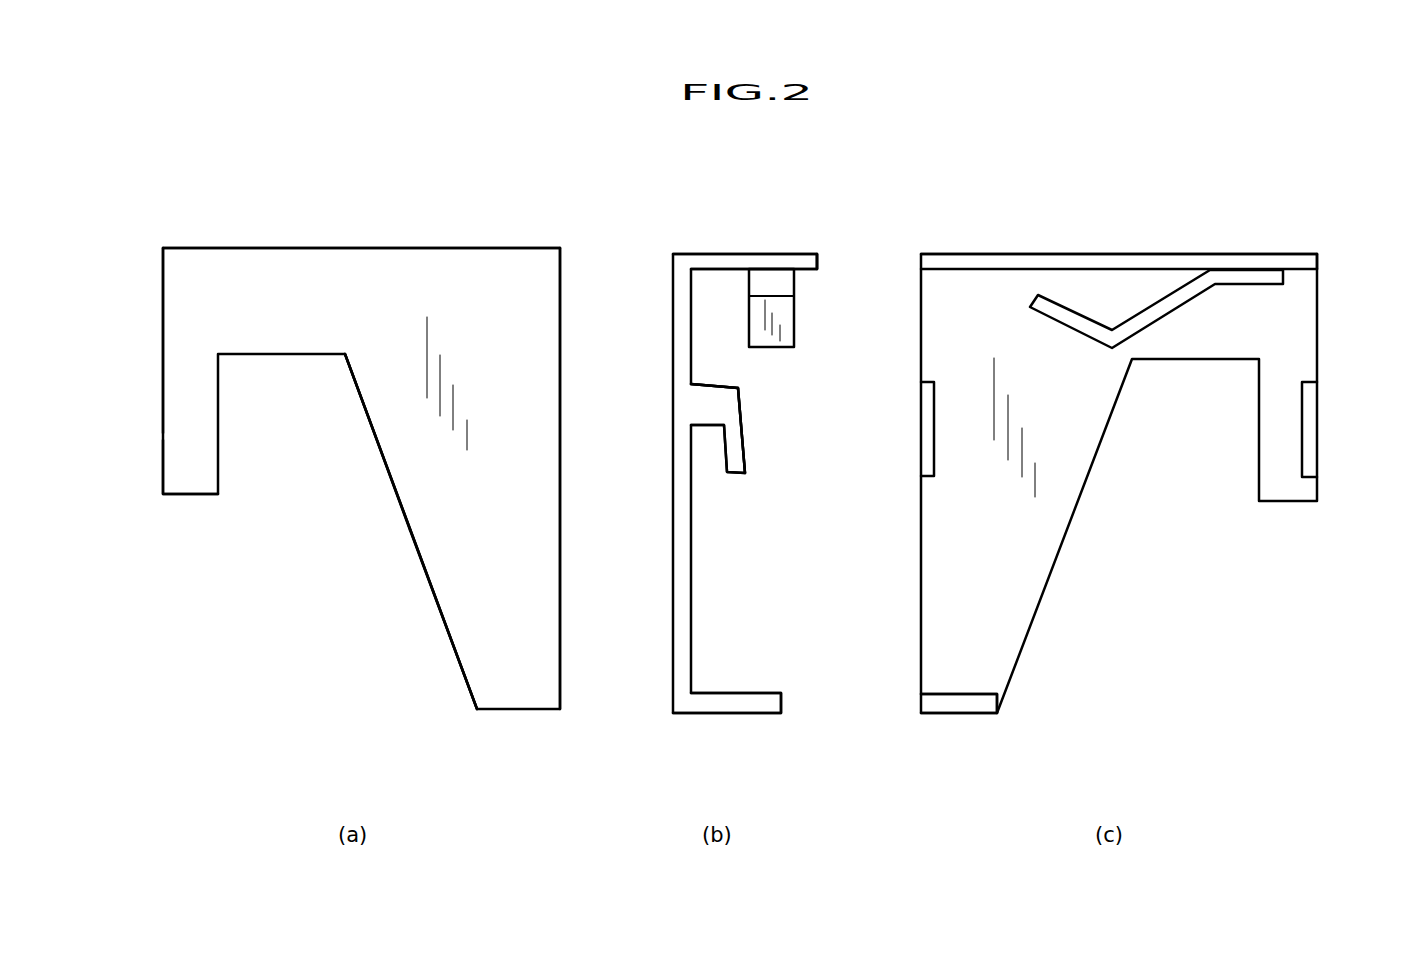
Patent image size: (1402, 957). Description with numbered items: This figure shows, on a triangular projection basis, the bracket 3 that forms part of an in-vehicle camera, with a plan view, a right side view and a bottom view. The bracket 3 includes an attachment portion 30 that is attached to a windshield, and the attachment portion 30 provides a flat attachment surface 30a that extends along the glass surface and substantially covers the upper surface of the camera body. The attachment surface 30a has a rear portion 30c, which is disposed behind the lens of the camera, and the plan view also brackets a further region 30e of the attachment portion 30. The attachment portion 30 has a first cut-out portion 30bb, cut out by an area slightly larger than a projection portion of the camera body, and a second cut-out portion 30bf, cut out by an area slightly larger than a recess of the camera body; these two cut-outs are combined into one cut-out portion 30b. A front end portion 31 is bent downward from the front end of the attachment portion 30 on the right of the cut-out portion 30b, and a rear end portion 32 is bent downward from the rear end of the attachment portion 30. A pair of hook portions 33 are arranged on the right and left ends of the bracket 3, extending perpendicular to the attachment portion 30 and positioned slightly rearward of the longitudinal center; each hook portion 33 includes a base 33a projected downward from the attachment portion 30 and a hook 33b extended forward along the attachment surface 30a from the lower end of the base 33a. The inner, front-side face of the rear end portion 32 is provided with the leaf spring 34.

The bracket 3 is at (509, 193).
The attachment portion 30 is at (673, 462).
The attachment surface 30a is at (326, 272).
The cut-out portion 30b is at (294, 478).
The first cut-out portion 30bb is at (381, 452).
The second cut-out portion 30bf is at (416, 545).
The rear portion 30c is at (150, 250).
The lower region 30e is at (150, 440).
The front end portion 31 is at (710, 714).
The rear end portion 32 is at (718, 262).
The hook portions 33 is at (747, 453).
The base 33a is at (714, 396).
The hook 33b is at (736, 433).
The leaf spring 34 is at (795, 323).